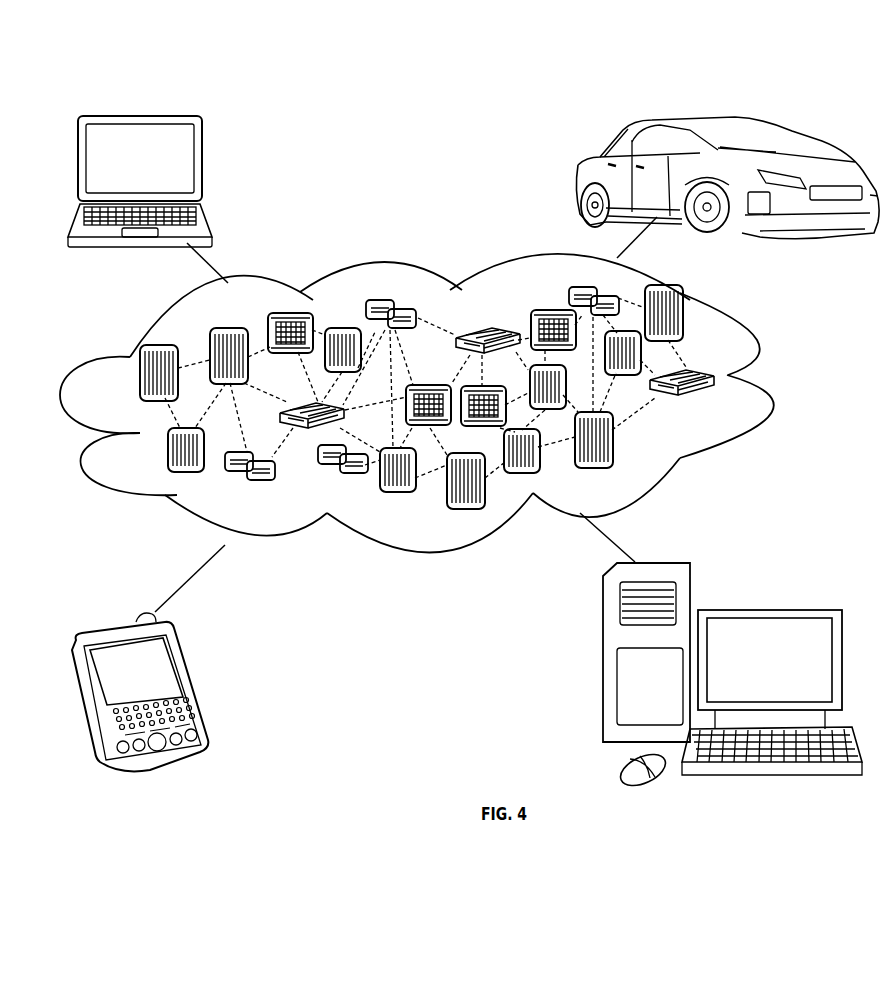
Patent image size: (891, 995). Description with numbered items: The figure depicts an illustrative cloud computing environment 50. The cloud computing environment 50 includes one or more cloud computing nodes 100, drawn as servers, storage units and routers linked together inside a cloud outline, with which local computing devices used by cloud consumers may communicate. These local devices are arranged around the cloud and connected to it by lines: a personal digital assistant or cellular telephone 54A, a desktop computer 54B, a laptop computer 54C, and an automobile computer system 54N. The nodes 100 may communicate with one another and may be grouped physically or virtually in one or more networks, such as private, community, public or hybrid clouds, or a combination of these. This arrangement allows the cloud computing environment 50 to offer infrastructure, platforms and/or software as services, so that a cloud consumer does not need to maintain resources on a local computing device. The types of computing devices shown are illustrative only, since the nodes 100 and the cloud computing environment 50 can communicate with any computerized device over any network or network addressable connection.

The cloud computing environment 50 is at (776, 381).
The cloud computing nodes 100 is at (446, 403).
The personal digital assistant or cellular telephone 54A is at (197, 683).
The desktop computer 54B is at (767, 609).
The laptop computer 54C is at (204, 166).
The automobile computer system 54N is at (582, 185).